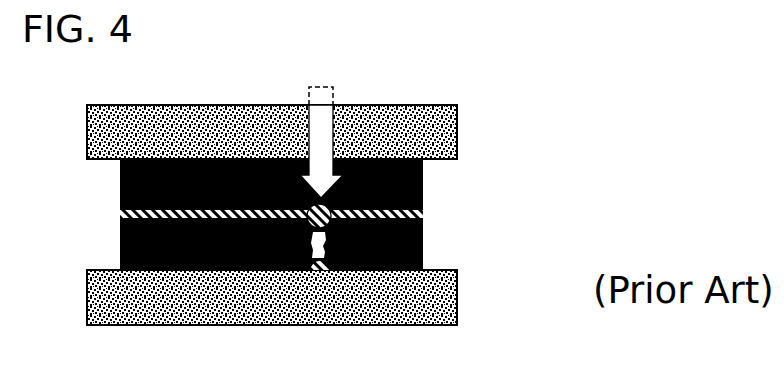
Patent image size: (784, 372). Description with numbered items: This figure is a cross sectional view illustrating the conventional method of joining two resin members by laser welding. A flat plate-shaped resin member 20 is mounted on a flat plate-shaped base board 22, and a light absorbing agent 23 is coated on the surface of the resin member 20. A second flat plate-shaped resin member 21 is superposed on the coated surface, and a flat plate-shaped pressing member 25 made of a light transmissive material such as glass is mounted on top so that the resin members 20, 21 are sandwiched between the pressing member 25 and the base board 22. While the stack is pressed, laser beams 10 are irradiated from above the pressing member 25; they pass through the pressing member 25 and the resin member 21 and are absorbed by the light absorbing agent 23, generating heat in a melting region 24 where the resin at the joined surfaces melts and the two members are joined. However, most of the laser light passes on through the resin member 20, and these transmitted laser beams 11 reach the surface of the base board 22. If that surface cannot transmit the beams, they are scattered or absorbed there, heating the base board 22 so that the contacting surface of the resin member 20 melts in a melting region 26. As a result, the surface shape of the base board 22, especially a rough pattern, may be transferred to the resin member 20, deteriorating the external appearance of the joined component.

The laser beams 10 is at (308, 90).
The laser beams having passed through the resin member 11 is at (284, 272).
The resin member 20 is at (423, 245).
The resin member 21 is at (423, 190).
The base board 22 is at (452, 297).
The light absorbing agent 23 is at (120, 213).
The melting region 24 is at (353, 157).
The pressing member 25 is at (447, 135).
The melting region 26 is at (318, 272).